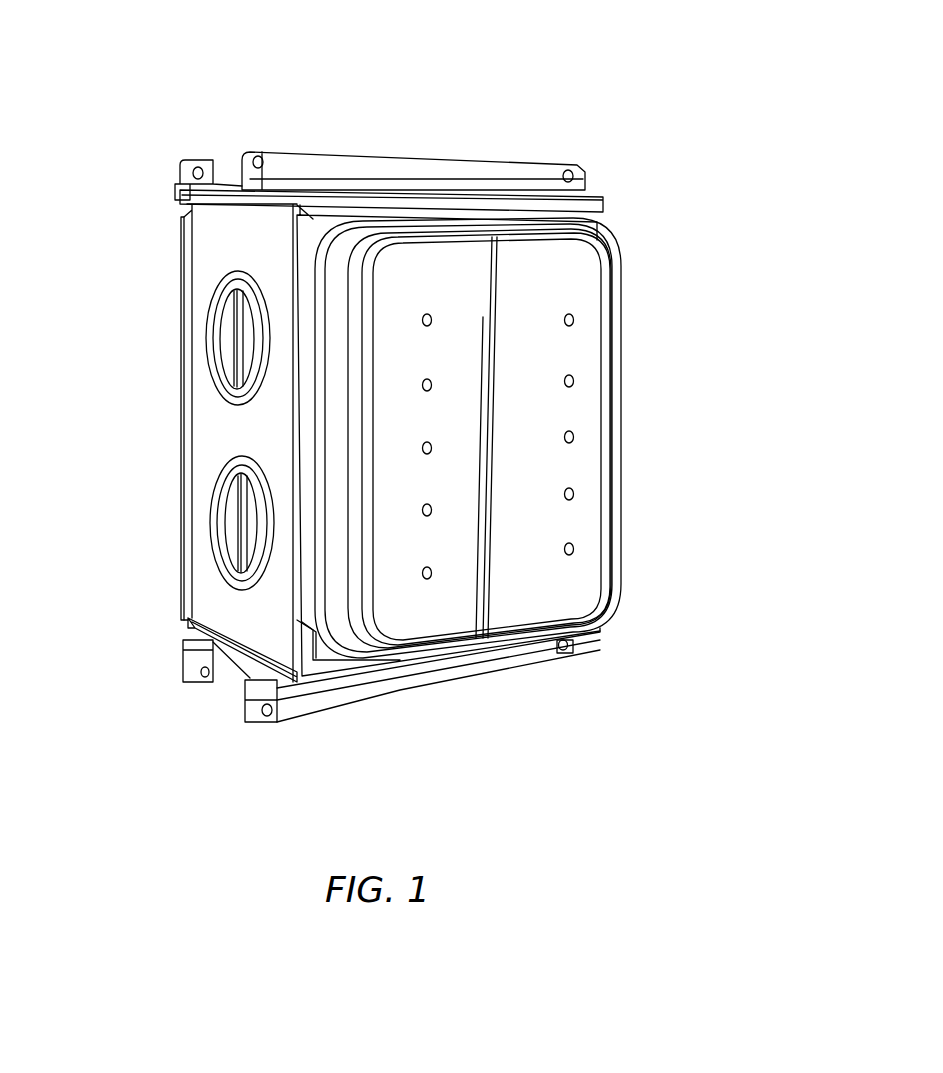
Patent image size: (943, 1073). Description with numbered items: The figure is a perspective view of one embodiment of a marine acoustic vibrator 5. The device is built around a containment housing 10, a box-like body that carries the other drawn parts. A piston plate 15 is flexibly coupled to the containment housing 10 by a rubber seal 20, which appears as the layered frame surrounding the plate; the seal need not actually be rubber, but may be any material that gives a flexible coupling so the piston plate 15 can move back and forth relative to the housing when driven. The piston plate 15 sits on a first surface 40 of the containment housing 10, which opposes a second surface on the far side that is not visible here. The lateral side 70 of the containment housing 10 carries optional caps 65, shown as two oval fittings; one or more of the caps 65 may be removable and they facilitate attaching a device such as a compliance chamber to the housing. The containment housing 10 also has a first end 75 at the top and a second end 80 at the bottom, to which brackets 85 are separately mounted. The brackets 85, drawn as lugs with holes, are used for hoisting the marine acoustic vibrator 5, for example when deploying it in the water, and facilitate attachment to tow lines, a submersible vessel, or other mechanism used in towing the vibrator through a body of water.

The marine acoustic vibrator 5 is at (584, 86).
The containment housing 10 is at (232, 241).
The piston plate 15 is at (575, 272).
The rubber seal 20 is at (333, 398).
The first surface 40 is at (330, 652).
The cap 65 is at (210, 310).
The lateral side 70 is at (212, 446).
The first end 75 is at (598, 192).
The second end 80 is at (300, 697).
The bracket 85 is at (283, 158).